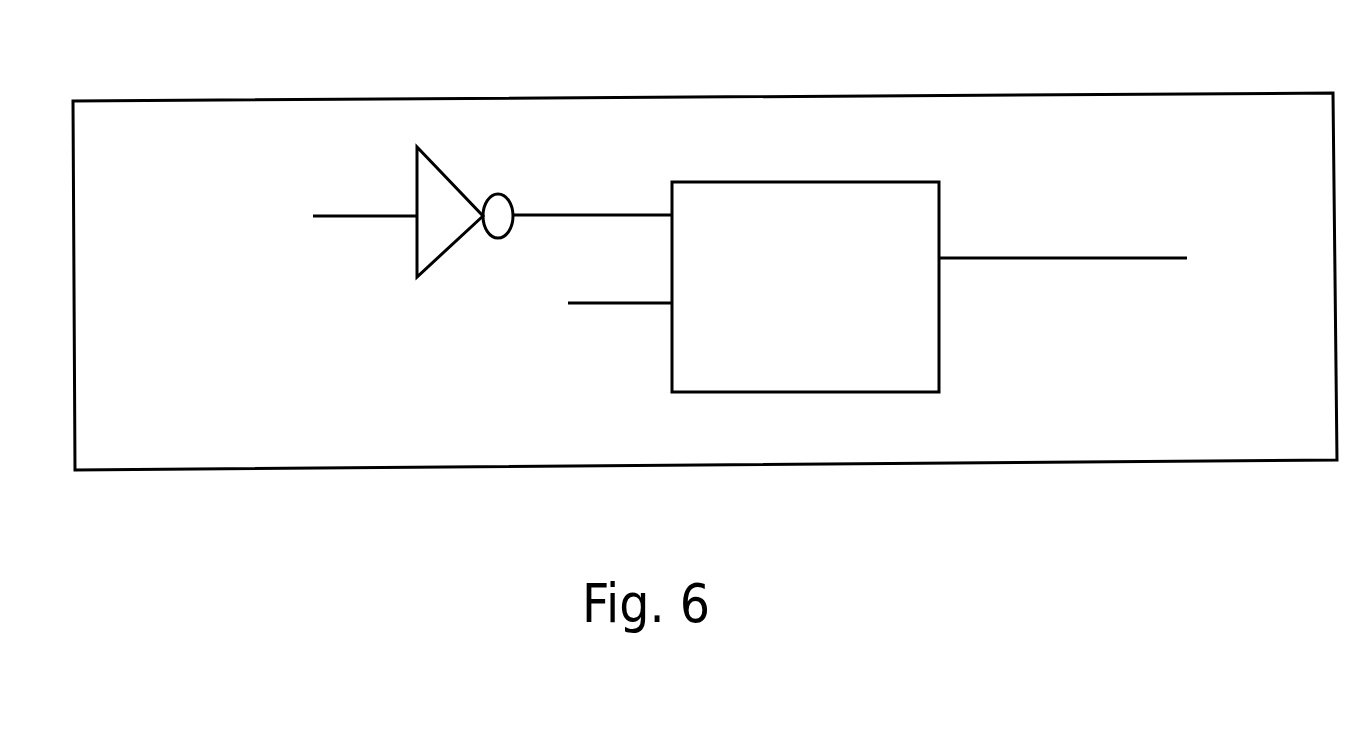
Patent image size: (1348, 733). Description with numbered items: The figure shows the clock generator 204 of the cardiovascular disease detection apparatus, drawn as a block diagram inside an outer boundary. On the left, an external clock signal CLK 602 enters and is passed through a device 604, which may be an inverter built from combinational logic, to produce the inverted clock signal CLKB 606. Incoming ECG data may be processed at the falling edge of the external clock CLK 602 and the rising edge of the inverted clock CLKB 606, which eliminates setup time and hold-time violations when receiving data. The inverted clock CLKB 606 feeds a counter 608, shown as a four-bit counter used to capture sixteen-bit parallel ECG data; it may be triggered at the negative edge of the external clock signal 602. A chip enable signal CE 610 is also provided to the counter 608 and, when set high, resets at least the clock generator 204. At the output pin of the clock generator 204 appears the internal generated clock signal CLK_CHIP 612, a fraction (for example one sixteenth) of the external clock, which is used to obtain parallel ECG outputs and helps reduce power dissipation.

The clock generator 204 is at (650, 34).
The external clock signal CLK 602 is at (314, 238).
The device 604 is at (465, 212).
The inverted clock signal CLKB 606 is at (592, 172).
The counter 608 is at (805, 287).
The chip enable signal CE 610 is at (583, 323).
The internal generated clock signal CLK_CHIP 612 is at (1063, 303).